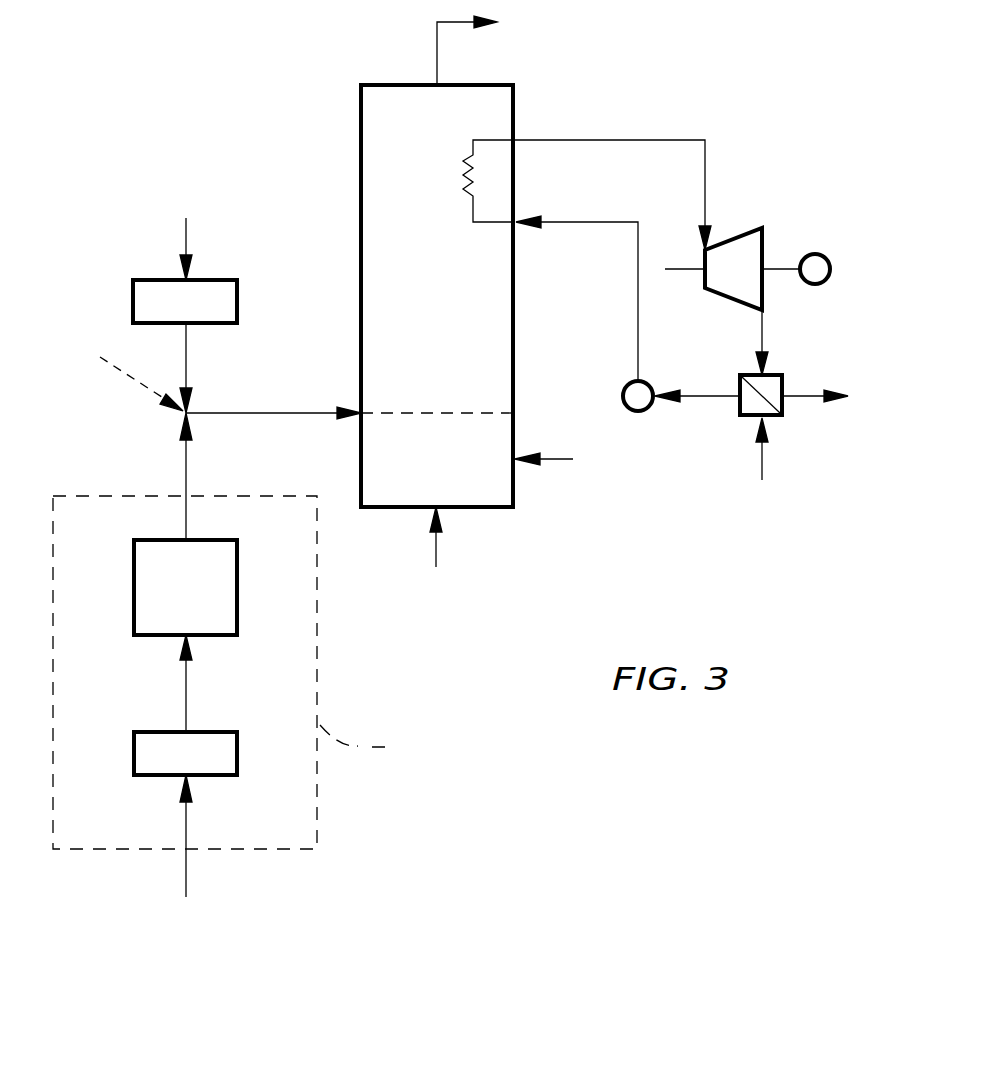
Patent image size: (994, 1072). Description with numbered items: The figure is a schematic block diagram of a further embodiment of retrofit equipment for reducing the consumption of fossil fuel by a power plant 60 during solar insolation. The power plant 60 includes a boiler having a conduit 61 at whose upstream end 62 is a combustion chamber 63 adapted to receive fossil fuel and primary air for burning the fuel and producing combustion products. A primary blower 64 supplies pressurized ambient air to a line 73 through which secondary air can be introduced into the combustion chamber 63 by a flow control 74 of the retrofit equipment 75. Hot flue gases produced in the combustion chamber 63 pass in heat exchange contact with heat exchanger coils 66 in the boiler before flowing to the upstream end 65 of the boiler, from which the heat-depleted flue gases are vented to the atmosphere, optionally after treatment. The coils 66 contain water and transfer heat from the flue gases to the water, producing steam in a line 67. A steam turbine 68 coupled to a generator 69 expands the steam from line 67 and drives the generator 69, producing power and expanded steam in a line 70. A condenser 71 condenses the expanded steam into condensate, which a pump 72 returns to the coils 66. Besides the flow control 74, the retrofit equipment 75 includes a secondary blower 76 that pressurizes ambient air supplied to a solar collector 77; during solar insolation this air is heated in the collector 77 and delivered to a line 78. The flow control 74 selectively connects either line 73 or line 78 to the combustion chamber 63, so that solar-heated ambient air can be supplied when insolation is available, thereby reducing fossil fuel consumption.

The power plant 60 is at (642, 40).
The conduit 61 is at (514, 331).
The upstream end of conduit 62 is at (455, 509).
The combustion chamber 63 is at (514, 434).
The primary blower 64 is at (213, 279).
The upstream end of boiler 65 is at (475, 85).
The heat exchanger coils 66 is at (466, 200).
The steam line 67 is at (652, 139).
The steam turbine 68 is at (740, 231).
The generator 69 is at (826, 256).
The expanded steam line 70 is at (762, 328).
The condenser 71 is at (784, 410).
The pump 72 is at (648, 409).
The line 73 is at (186, 362).
The flow control 74 is at (128, 373).
The retrofit equipment 75 is at (222, 852).
The secondary blower 76 is at (215, 731).
The solar collector 77 is at (215, 637).
The line 78 is at (186, 473).